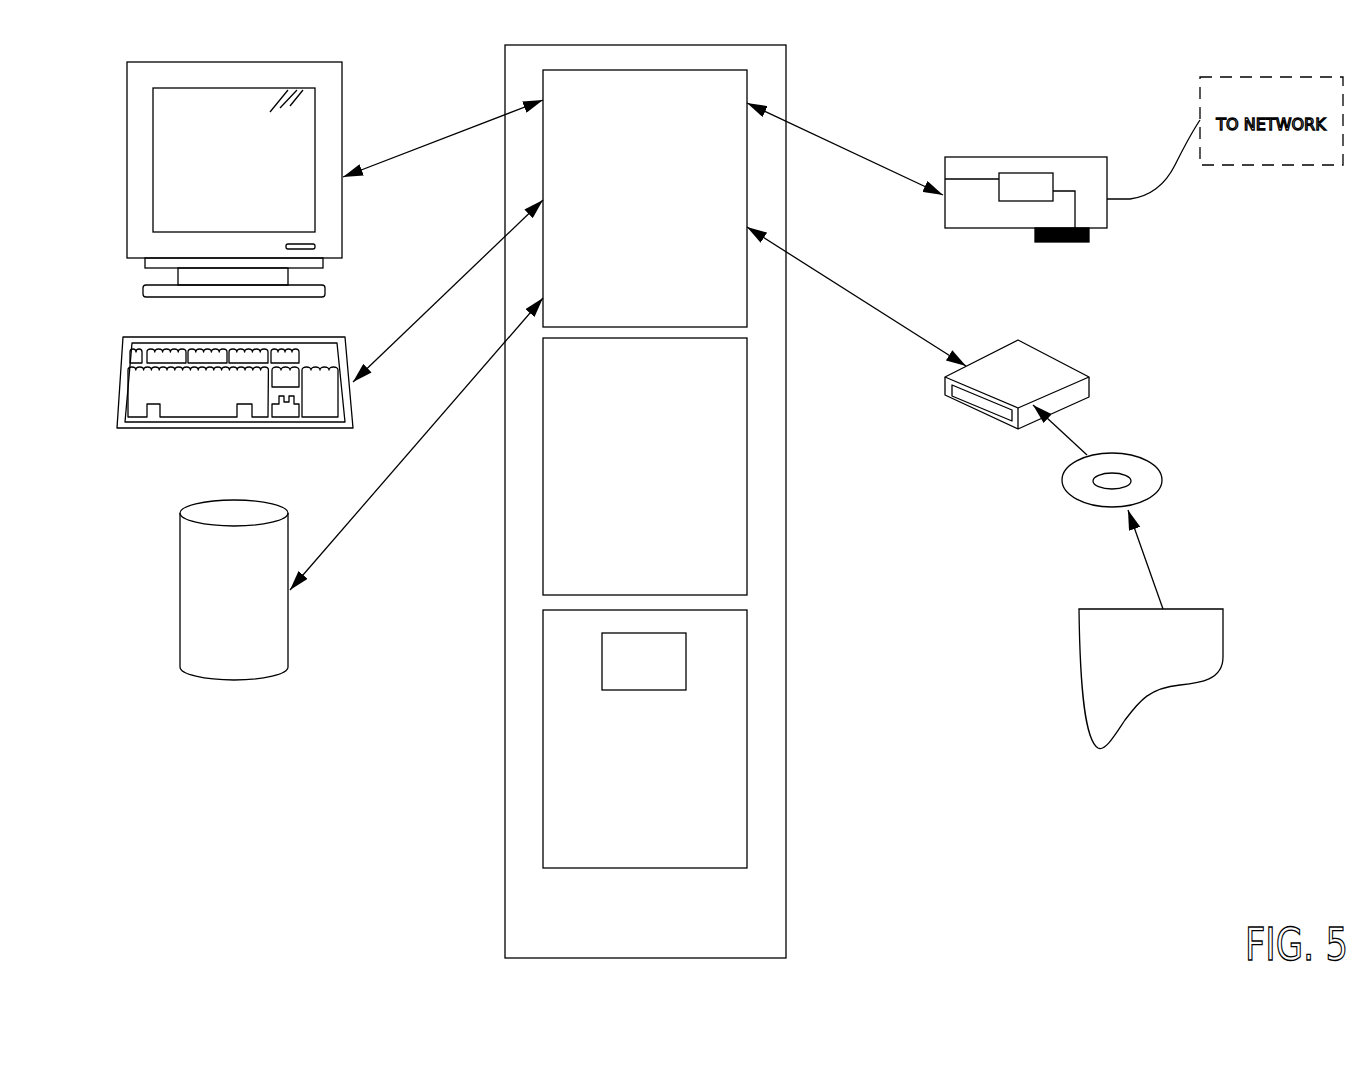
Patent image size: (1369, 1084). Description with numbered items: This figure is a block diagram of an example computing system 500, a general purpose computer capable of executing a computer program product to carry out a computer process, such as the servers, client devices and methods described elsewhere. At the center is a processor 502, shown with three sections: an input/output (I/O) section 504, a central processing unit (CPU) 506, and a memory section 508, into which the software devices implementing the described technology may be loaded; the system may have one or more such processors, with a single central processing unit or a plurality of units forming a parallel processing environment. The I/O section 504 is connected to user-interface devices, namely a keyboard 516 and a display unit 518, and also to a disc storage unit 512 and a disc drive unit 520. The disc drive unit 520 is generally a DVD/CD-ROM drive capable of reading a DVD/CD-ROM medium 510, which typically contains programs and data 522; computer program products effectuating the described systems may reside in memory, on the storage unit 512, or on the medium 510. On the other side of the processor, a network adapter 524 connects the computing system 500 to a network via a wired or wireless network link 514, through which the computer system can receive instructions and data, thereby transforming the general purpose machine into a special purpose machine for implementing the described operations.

The computing system 500 is at (360, 840).
The processor 502 is at (631, 928).
The input/output (I/O) section 504 is at (631, 218).
The central processing unit (CPU) 506 is at (631, 487).
The memory section 508 is at (631, 760).
The DVD/CD-ROM medium 510 is at (1153, 462).
The storage unit 512 is at (180, 590).
The network link 514 is at (1140, 195).
The keyboard 516 is at (178, 430).
The display unit 518 is at (127, 181).
The disc drive unit 520 is at (1028, 340).
The programs and data 522 is at (1079, 625).
The network adapter 524 is at (990, 156).